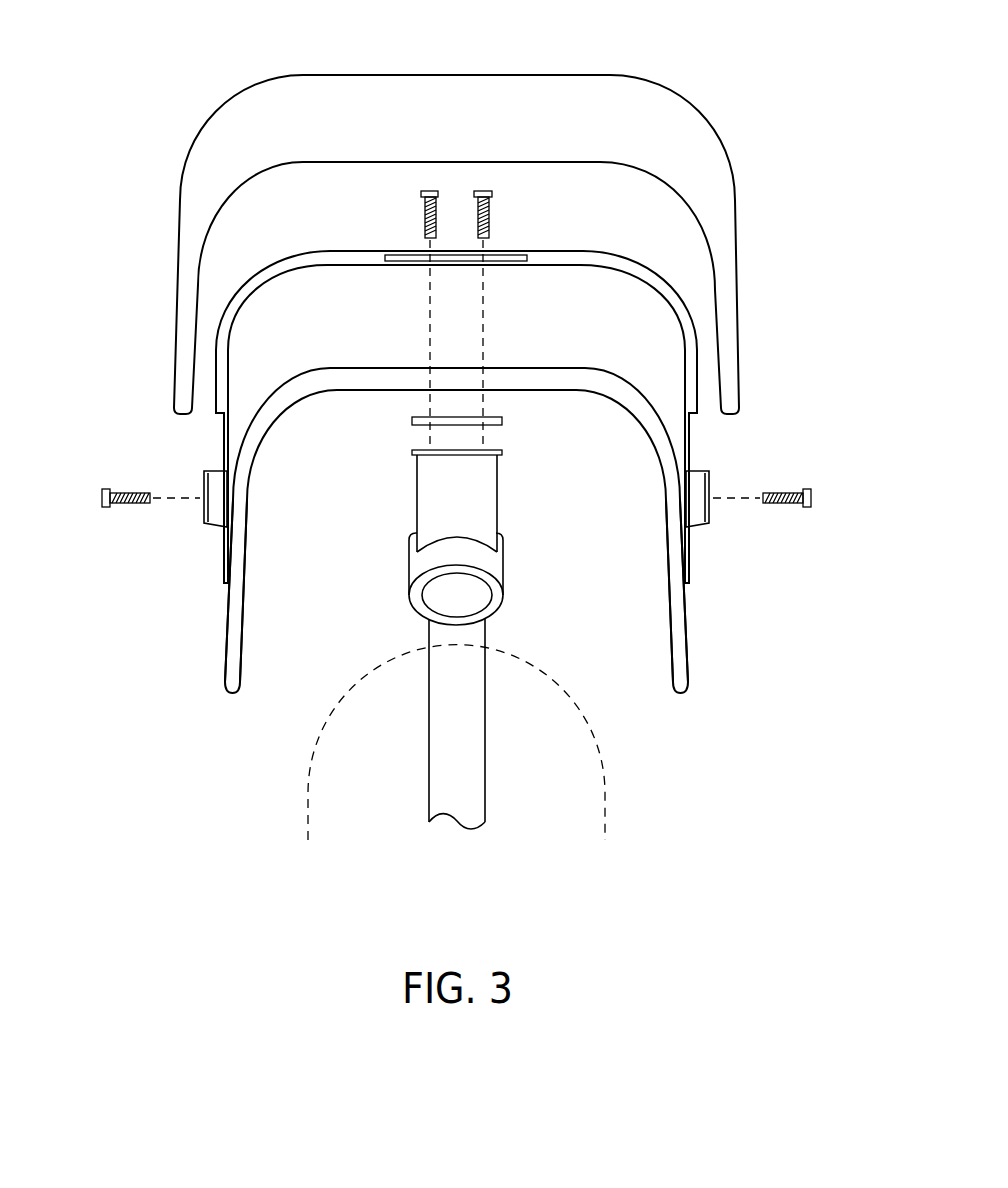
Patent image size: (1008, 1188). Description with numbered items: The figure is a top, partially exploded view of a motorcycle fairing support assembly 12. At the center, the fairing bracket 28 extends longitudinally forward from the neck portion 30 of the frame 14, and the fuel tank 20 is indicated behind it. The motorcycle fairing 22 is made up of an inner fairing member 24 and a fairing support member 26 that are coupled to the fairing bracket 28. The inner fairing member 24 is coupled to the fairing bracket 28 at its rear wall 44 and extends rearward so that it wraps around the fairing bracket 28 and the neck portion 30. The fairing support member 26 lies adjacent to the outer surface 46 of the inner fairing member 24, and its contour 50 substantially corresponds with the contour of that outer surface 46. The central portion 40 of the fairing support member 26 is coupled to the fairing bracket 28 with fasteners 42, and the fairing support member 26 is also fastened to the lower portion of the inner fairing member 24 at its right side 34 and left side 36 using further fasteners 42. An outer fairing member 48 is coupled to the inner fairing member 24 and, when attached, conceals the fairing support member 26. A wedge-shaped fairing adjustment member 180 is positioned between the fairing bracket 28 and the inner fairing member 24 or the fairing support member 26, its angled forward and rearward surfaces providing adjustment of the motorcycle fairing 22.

The motorcycle fairing support assembly 12 is at (493, 383).
The frame 14 is at (452, 757).
The fuel tank 20 is at (590, 817).
The motorcycle fairing 22 is at (463, 211).
The inner fairing member 24 is at (481, 531).
The fairing support member 26 is at (688, 377).
The fairing bracket 28 is at (443, 505).
The neck portion 30 is at (400, 568).
The right side 34 is at (696, 643).
The left side 36 is at (222, 677).
The central portion 40 is at (532, 243).
The fasteners 42 is at (485, 190).
The rear wall 44 is at (374, 391).
The outer surface 46 is at (368, 367).
The outer fairing member 48 is at (541, 105).
The contour 50 is at (521, 362).
The fairing adjustment member 180 is at (502, 421).